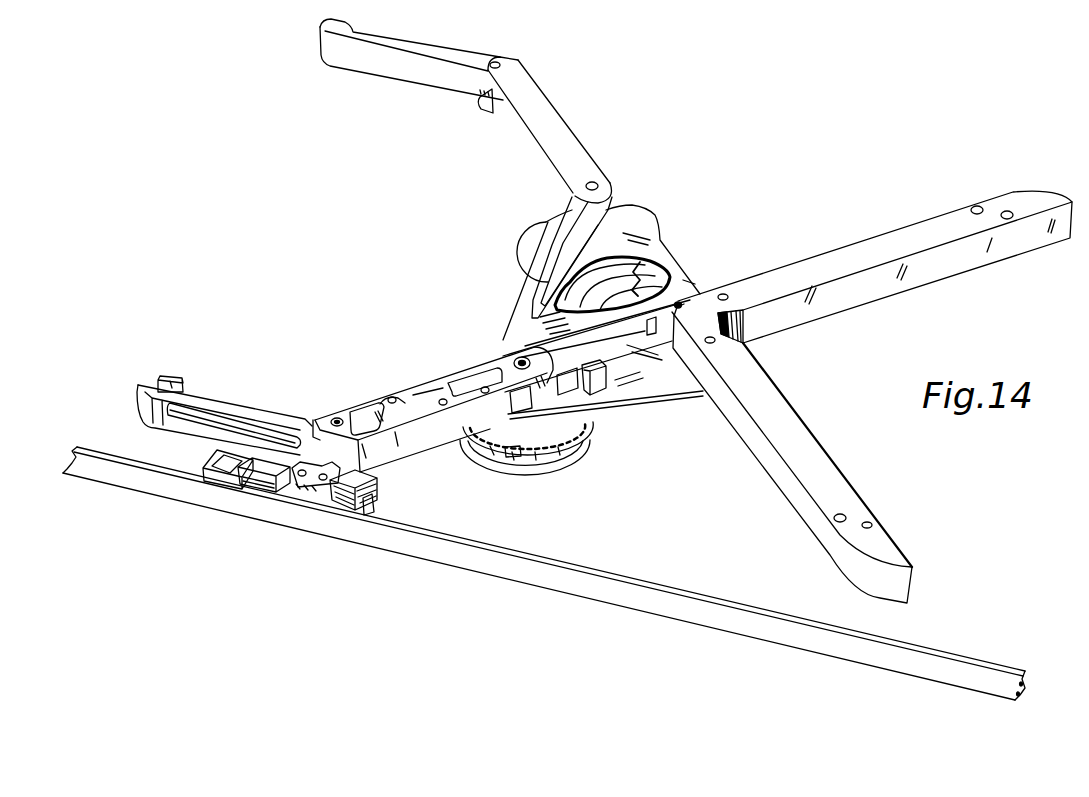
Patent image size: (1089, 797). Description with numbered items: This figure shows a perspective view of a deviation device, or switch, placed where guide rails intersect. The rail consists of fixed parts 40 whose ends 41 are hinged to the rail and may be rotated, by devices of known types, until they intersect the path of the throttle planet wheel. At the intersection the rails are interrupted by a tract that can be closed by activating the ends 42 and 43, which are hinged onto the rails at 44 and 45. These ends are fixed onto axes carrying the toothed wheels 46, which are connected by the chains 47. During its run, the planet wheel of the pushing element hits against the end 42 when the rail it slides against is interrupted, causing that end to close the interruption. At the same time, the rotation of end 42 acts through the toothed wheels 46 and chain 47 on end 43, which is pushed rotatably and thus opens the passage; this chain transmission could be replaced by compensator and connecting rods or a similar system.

The fixed parts 40 is at (797, 277).
The ends 41 is at (212, 408).
The end 42 is at (605, 217).
The end 43 is at (625, 333).
The hinge 44 is at (600, 177).
The hinge 45 is at (519, 358).
The toothed wheels 46 is at (557, 466).
The chains 47 is at (513, 462).